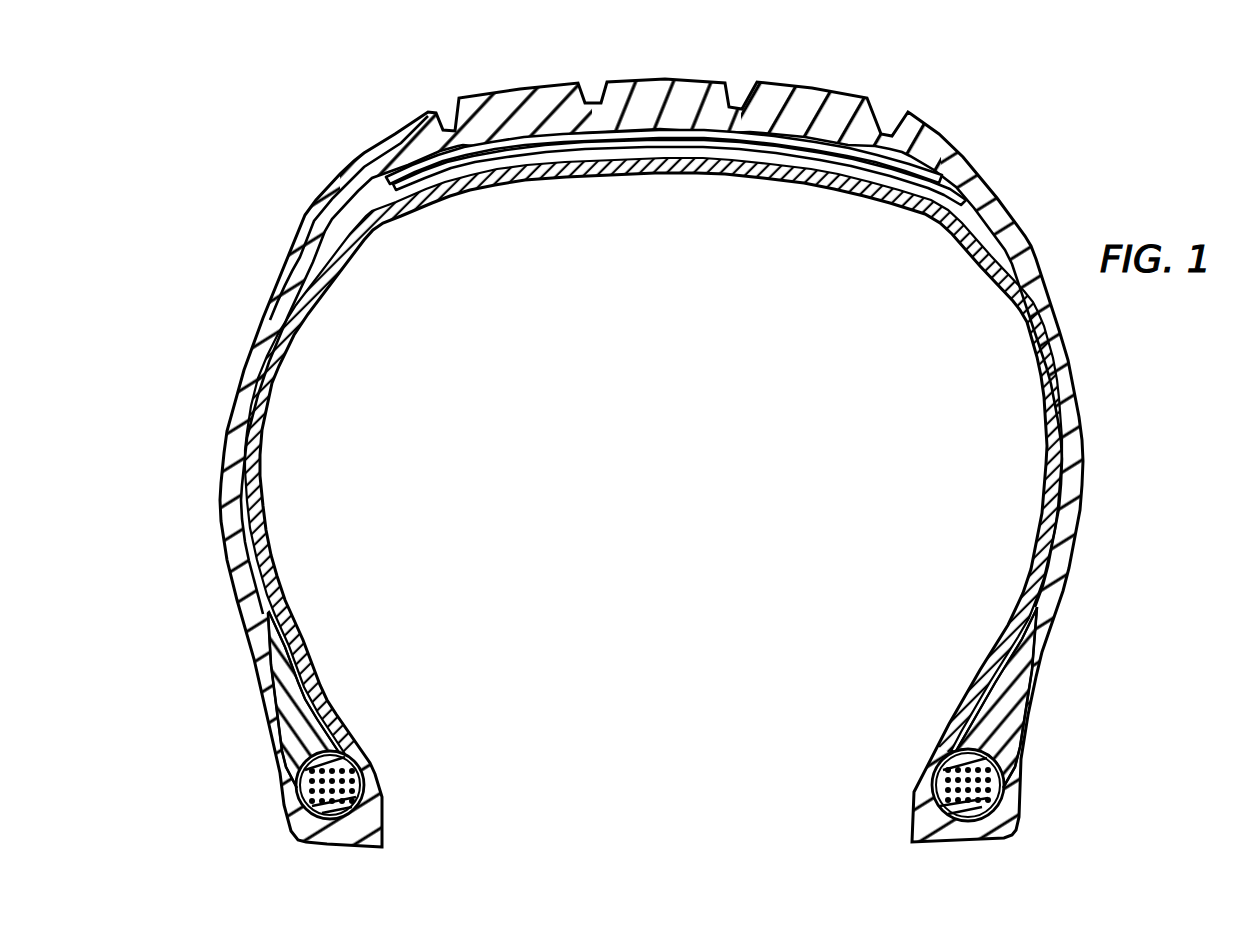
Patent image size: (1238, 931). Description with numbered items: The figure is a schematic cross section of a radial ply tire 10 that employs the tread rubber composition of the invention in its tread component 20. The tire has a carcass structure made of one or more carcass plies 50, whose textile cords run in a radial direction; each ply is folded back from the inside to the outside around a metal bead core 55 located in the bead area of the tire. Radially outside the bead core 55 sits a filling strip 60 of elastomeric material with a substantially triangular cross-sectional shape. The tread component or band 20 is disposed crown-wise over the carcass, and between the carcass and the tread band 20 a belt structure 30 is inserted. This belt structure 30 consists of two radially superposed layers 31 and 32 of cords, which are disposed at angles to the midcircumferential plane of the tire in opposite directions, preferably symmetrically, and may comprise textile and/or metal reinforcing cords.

The tire 10 is at (300, 188).
The tread component 20 is at (630, 104).
The belt structure 30 is at (727, 196).
The belt layer 31 is at (521, 153).
The belt layer 32 is at (620, 135).
The carcass ply 50 is at (1040, 600).
The bead core 55 is at (303, 790).
The filling strip 60 is at (310, 720).